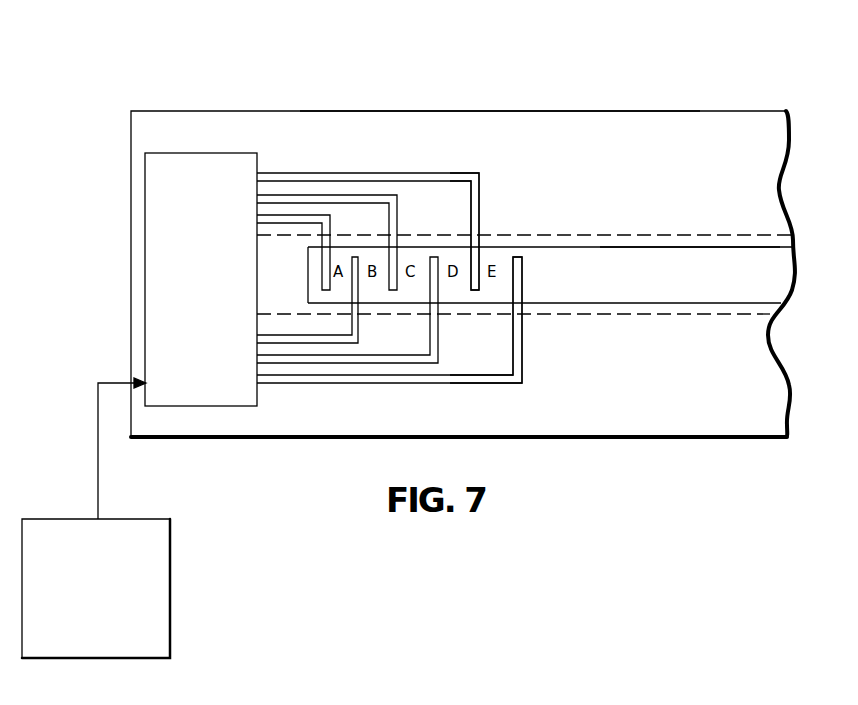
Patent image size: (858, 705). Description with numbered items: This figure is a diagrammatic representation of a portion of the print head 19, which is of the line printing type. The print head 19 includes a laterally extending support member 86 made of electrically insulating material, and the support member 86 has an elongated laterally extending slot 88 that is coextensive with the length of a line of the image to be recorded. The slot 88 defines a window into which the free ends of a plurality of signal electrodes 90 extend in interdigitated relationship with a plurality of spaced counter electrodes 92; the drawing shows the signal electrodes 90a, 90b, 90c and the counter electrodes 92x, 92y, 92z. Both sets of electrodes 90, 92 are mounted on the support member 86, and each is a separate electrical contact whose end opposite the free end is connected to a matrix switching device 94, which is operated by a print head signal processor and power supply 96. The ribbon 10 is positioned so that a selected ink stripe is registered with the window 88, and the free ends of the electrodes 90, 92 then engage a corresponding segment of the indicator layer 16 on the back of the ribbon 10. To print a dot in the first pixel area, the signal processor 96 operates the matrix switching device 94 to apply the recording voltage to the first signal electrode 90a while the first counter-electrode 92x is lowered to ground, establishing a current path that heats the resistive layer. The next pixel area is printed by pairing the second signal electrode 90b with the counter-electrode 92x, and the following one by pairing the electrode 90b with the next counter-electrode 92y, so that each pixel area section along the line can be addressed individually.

The print head 19 is at (308, 97).
The support member 86 is at (536, 128).
The slot 88 is at (581, 272).
The ribbon 10 is at (712, 235).
The indicator layer 16 is at (695, 284).
The signal electrodes 90 is at (303, 169).
The first signal electrode 90a is at (330, 223).
The second signal electrode 90b is at (397, 223).
The signal electrode 90c is at (479, 226).
The counter electrodes 92 is at (357, 387).
The first counter-electrode 92x is at (358, 334).
The counter-electrode 92y is at (438, 334).
The counter-electrode 92z is at (522, 334).
The matrix switching device 94 is at (226, 400).
The print head signal processor and power supply 96 is at (65, 523).